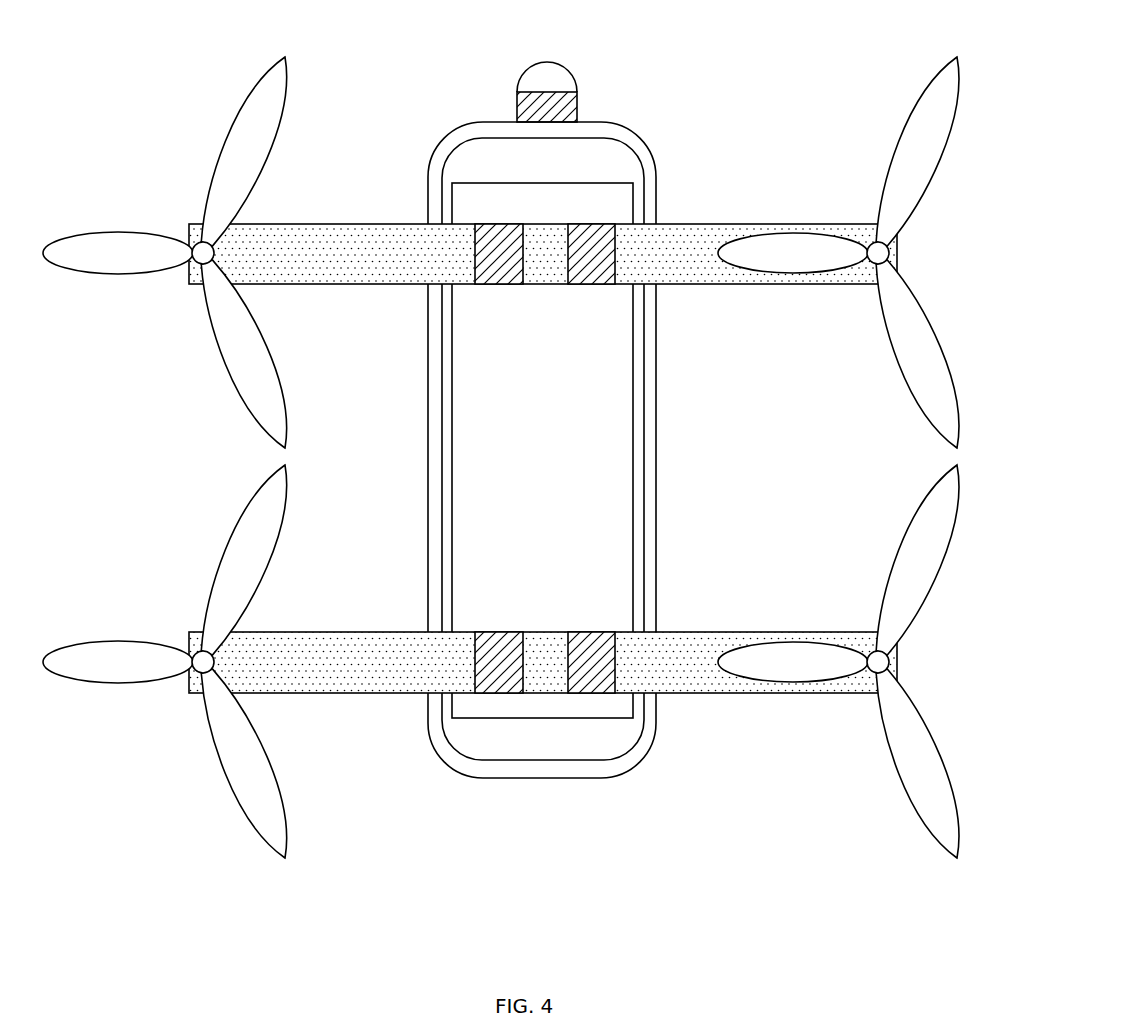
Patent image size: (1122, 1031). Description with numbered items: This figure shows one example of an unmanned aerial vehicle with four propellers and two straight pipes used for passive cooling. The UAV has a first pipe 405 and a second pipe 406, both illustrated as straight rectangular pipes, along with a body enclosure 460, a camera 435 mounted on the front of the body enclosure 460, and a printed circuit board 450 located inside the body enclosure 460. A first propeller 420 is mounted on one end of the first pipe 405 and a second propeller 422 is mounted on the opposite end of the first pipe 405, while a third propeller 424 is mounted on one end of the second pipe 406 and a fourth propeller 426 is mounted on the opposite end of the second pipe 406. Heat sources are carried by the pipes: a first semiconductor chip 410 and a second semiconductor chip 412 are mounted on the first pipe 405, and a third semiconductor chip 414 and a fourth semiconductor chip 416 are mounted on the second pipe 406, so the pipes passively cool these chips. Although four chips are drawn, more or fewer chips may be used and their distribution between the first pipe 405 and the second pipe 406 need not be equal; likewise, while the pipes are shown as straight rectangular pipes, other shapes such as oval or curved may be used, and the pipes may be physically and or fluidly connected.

The first pipe 405 is at (693, 286).
The second pipe 406 is at (690, 632).
The first semiconductor chip 410 is at (605, 243).
The second semiconductor chip 412 is at (488, 270).
The third semiconductor chip 414 is at (600, 673).
The fourth semiconductor chip 416 is at (488, 645).
The first propeller 420 is at (262, 78).
The second propeller 422 is at (917, 124).
The third propeller 424 is at (920, 805).
The fourth propeller 426 is at (242, 797).
The camera 435 is at (548, 73).
The printed circuit board 450 is at (515, 183).
The body enclosure 460 is at (650, 468).